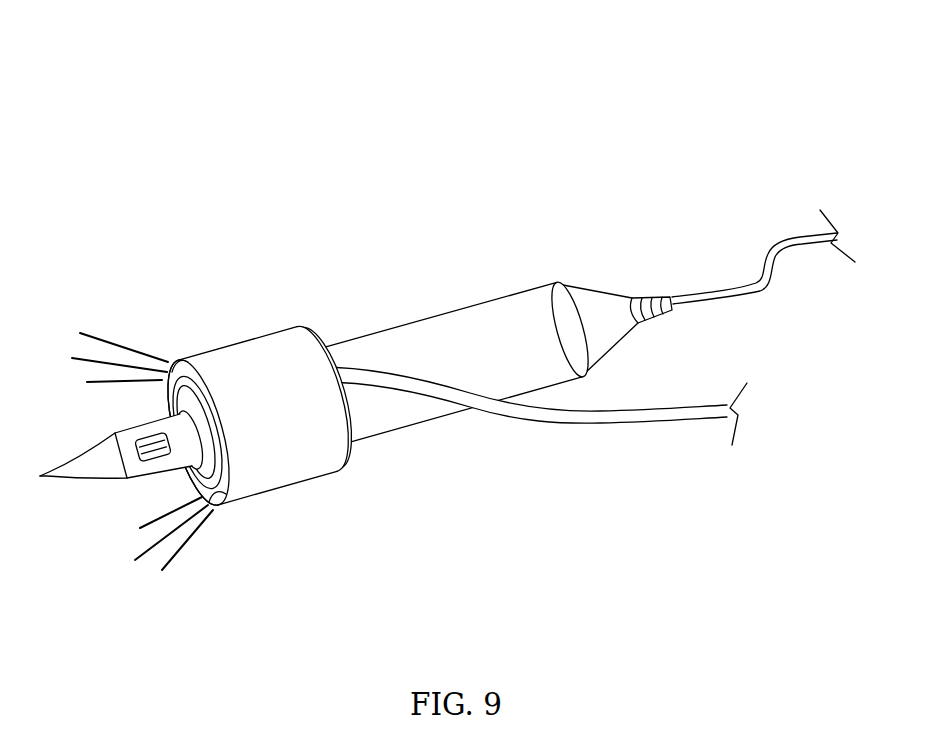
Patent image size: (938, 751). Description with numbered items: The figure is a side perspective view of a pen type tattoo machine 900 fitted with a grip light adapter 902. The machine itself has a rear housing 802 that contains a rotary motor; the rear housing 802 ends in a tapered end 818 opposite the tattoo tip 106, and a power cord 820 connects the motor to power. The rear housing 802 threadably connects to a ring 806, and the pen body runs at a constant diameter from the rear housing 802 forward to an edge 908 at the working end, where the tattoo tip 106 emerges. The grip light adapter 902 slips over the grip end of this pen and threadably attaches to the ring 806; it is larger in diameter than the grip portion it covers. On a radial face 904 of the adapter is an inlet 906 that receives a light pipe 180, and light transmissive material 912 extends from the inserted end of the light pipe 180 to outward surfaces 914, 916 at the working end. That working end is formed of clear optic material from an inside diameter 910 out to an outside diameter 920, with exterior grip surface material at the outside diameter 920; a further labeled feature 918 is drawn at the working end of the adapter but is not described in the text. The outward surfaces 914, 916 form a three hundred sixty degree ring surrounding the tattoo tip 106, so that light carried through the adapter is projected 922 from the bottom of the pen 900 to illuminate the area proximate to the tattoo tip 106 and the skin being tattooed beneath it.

The pen type tattoo machine 900 is at (459, 128).
The tattoo tip 106 is at (87, 480).
The light pipe 180 is at (598, 425).
The rear housing 802 is at (473, 306).
The ring 806 is at (327, 347).
The tapered end 818 is at (598, 290).
The power cord 820 is at (760, 294).
The grip light adapter 902 is at (268, 330).
The radial face 904 is at (347, 458).
The inlet 906 is at (333, 382).
The edge 908 is at (172, 407).
The inside diameter 910 is at (185, 363).
The light transmissive material 912 is at (200, 352).
The outward surface 914 is at (173, 358).
The outward surface 916 is at (213, 507).
The ring 918 is at (235, 483).
The outside diameter 920 is at (247, 480).
The projected light 922 is at (118, 342).